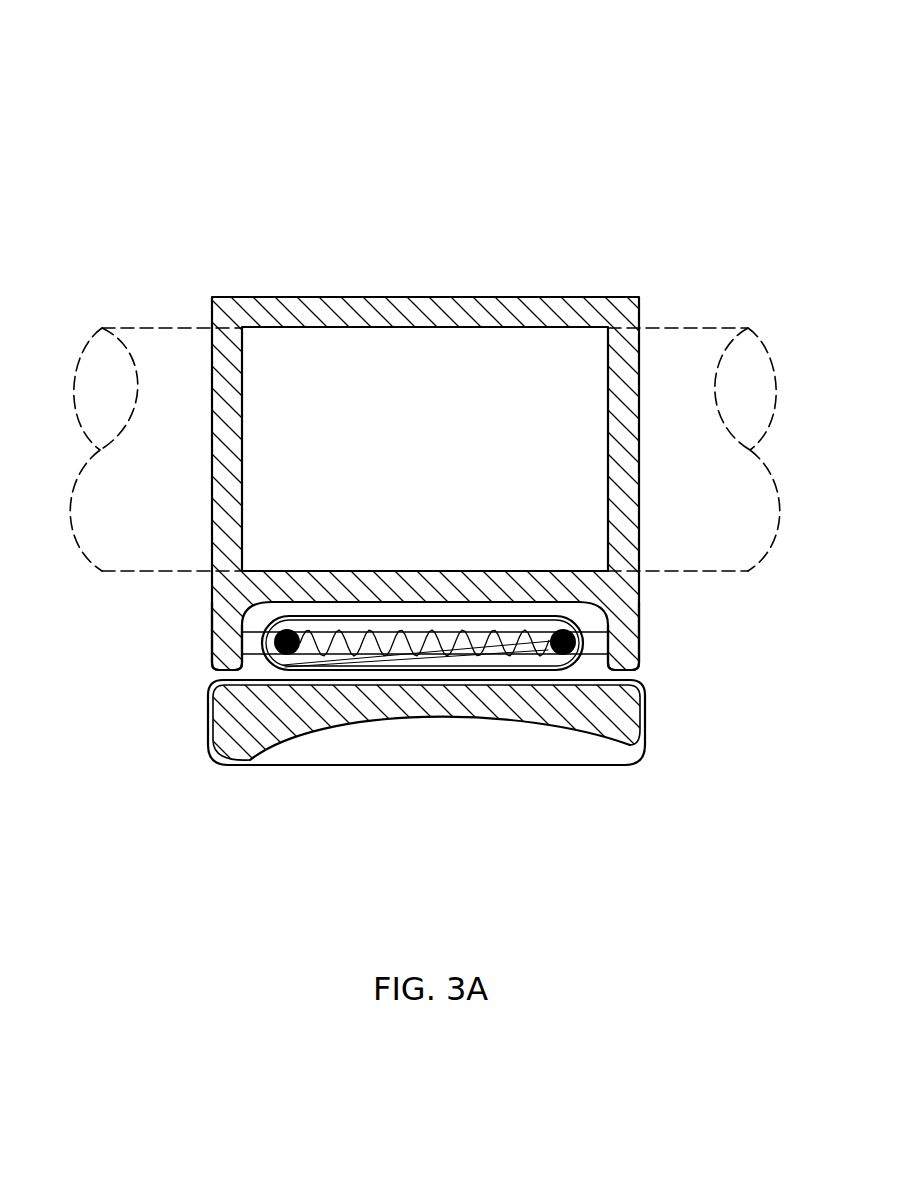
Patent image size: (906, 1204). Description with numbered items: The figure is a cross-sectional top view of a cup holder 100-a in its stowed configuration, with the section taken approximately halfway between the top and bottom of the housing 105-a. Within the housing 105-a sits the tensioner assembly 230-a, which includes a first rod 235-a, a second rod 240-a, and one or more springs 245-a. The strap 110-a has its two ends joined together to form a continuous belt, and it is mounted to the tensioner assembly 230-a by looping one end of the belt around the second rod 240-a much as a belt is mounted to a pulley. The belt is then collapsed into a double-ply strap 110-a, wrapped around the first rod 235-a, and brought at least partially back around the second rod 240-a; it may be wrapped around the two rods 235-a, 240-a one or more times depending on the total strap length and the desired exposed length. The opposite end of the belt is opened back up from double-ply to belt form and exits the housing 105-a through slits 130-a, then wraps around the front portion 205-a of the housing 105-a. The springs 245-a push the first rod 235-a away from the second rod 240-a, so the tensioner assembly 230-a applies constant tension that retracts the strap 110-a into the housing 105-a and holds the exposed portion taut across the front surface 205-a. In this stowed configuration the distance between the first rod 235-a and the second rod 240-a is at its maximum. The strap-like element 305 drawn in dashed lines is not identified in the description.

The cup holder 100-a is at (115, 76).
The housing 105-a is at (260, 297).
The strap / band 305 is at (708, 327).
The slits 130-a is at (217, 680).
The tensioner assembly 230-a is at (243, 615).
The first rod 235-a is at (275, 646).
The second rod 240-a is at (577, 642).
The springs 245-a is at (392, 630).
The strap 110-a is at (365, 767).
The front portion of the housing 205-a is at (490, 732).